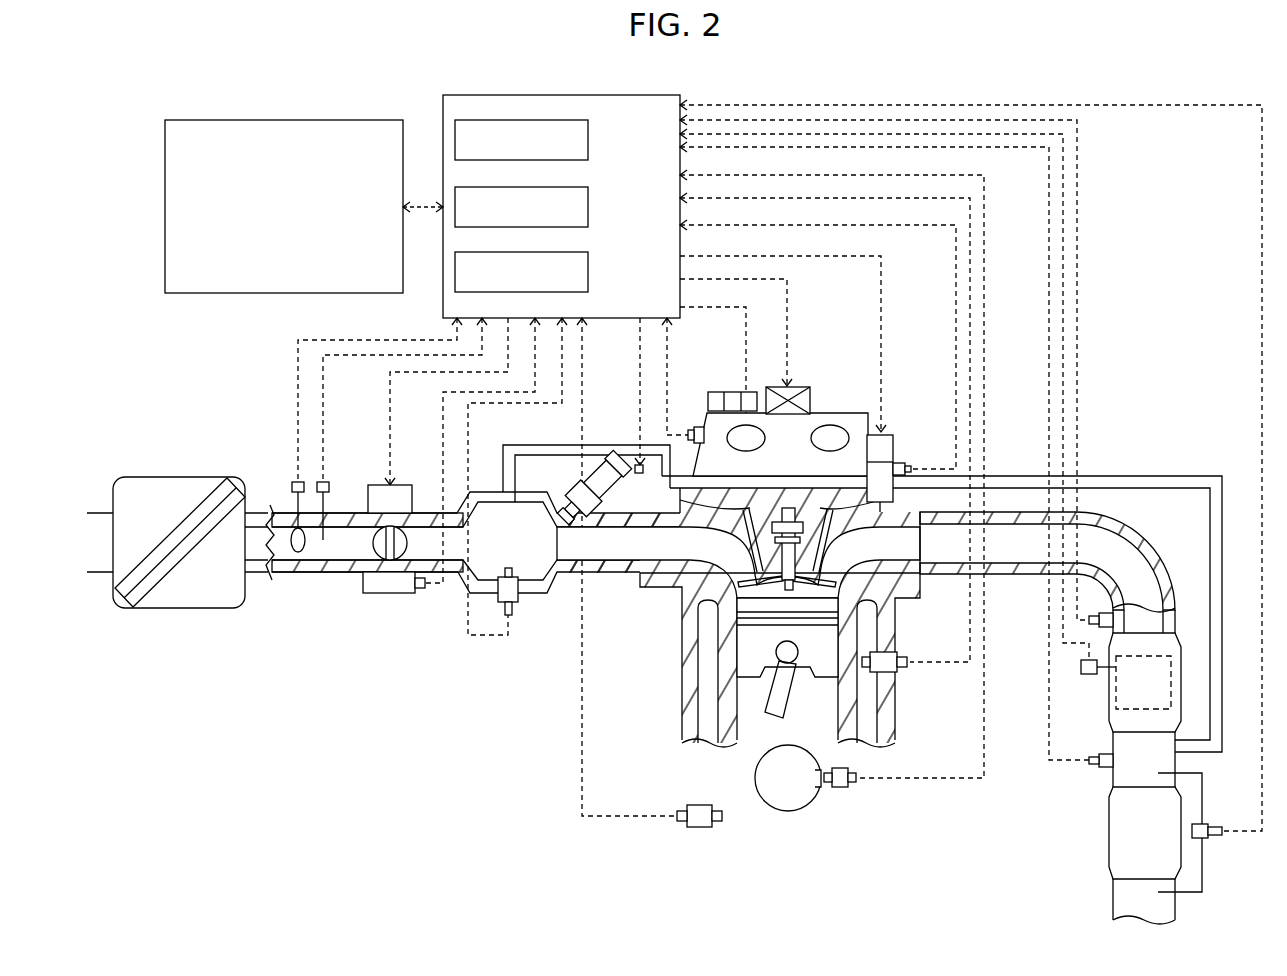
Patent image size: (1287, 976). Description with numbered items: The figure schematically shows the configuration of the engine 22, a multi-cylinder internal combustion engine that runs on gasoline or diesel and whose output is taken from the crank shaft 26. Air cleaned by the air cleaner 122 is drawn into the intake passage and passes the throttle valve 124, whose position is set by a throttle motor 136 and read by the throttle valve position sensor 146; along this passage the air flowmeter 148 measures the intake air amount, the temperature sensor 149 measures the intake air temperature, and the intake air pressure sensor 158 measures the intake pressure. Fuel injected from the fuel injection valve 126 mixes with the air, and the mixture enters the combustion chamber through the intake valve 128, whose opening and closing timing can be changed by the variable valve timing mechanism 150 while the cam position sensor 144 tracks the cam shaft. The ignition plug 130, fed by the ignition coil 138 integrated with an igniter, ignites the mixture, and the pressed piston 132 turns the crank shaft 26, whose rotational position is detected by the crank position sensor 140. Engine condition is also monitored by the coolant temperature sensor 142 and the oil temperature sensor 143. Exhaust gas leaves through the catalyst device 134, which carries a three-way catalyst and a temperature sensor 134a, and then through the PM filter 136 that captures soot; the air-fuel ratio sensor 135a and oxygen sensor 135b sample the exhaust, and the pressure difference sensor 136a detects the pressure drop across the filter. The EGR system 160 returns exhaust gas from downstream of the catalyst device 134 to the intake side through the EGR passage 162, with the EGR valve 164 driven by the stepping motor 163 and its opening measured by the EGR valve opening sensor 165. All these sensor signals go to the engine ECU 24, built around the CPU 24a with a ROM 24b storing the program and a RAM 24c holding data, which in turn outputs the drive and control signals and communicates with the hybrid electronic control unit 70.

The hybrid electronic control unit 70 is at (287, 120).
The engine ECU 24 is at (561, 181).
The CPU 24a is at (588, 141).
The ROM 24b is at (588, 208).
The RAM 24c is at (588, 273).
The engine 22 is at (903, 380).
The crank shaft 26 is at (755, 776).
The air cleaner 122 is at (178, 477).
The throttle valve 124 is at (392, 560).
The fuel injection valve 126 is at (604, 462).
The intake valve 128 is at (752, 566).
The ignition plug 130 is at (800, 555).
The piston 132 is at (752, 667).
The catalyst device 134 is at (1108, 690).
The temperature sensor 134a is at (1081, 664).
The air-fuel ratio sensor 135a is at (1098, 610).
The oxygen sensor 135b is at (1108, 768).
The PM filter 136 is at (405, 485).
The pressure difference sensor 136a is at (1216, 821).
The ignition coil 138 is at (796, 387).
The crank position sensor 140 is at (843, 790).
The coolant temperature sensor 142 is at (898, 656).
The oil temperature sensor 143 is at (691, 805).
The cam position sensor 144 is at (693, 427).
The throttle valve position sensor 146 is at (375, 594).
The air flowmeter 148 is at (294, 482).
The temperature sensor 149 is at (329, 482).
The variable valve timing mechanism 150 is at (835, 413).
The intake air pressure sensor 158 is at (519, 603).
The EGR system 160 is at (1162, 420).
The EGR passage 162 is at (1170, 477).
The stepping motor 163 is at (890, 435).
The EGR valve 164 is at (896, 492).
The EGR valve opening sensor 165 is at (910, 464).